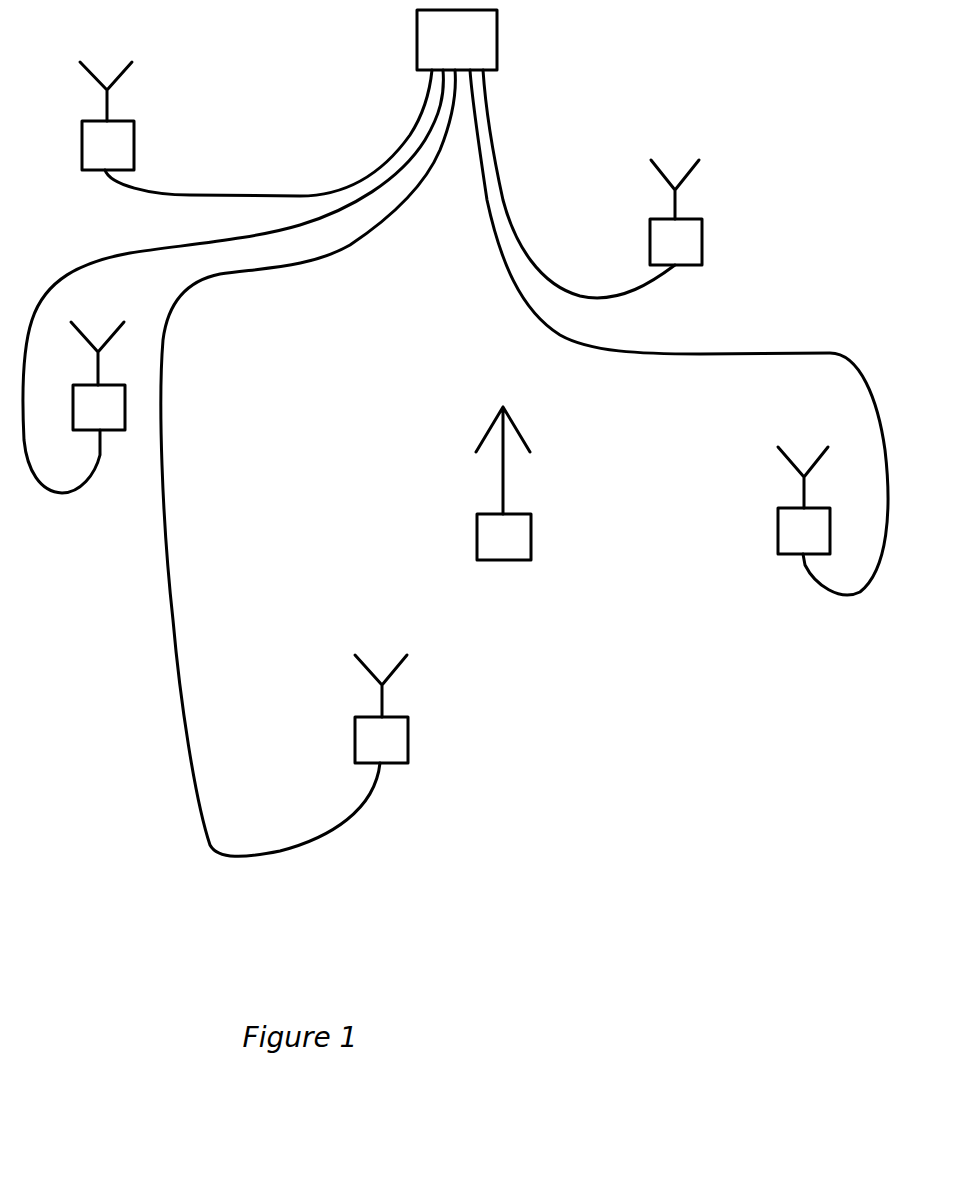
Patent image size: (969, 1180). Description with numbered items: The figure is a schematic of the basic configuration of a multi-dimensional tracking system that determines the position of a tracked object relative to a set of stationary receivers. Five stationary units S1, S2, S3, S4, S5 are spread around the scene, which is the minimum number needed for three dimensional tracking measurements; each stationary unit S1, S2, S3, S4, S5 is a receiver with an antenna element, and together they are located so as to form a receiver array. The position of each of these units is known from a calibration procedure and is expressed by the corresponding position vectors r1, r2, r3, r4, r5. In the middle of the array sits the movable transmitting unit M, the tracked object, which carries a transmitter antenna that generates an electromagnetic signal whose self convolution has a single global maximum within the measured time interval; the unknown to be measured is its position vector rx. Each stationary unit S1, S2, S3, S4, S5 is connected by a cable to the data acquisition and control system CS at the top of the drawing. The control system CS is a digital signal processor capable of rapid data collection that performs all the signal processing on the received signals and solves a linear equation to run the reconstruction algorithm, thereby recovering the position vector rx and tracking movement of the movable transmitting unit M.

The data acquisition and control system CS is at (457, 40).
The stationary unit S1 is at (236, 129).
The stationary unit S2 is at (620, 193).
The stationary unit S3 is at (679, 369).
The stationary unit S4 is at (312, 463).
The stationary unit S5 is at (233, 307).
The movable transmitting unit M is at (520, 518).
The position vector of stationary unit r1 is at (57, 85).
The position vector of stationary unit r2 is at (752, 283).
The position vector of stationary unit r3 is at (867, 635).
The position vector of stationary unit r4 is at (459, 780).
The position vector of stationary unit r5 is at (113, 510).
The position vector of movable unit rx is at (532, 595).